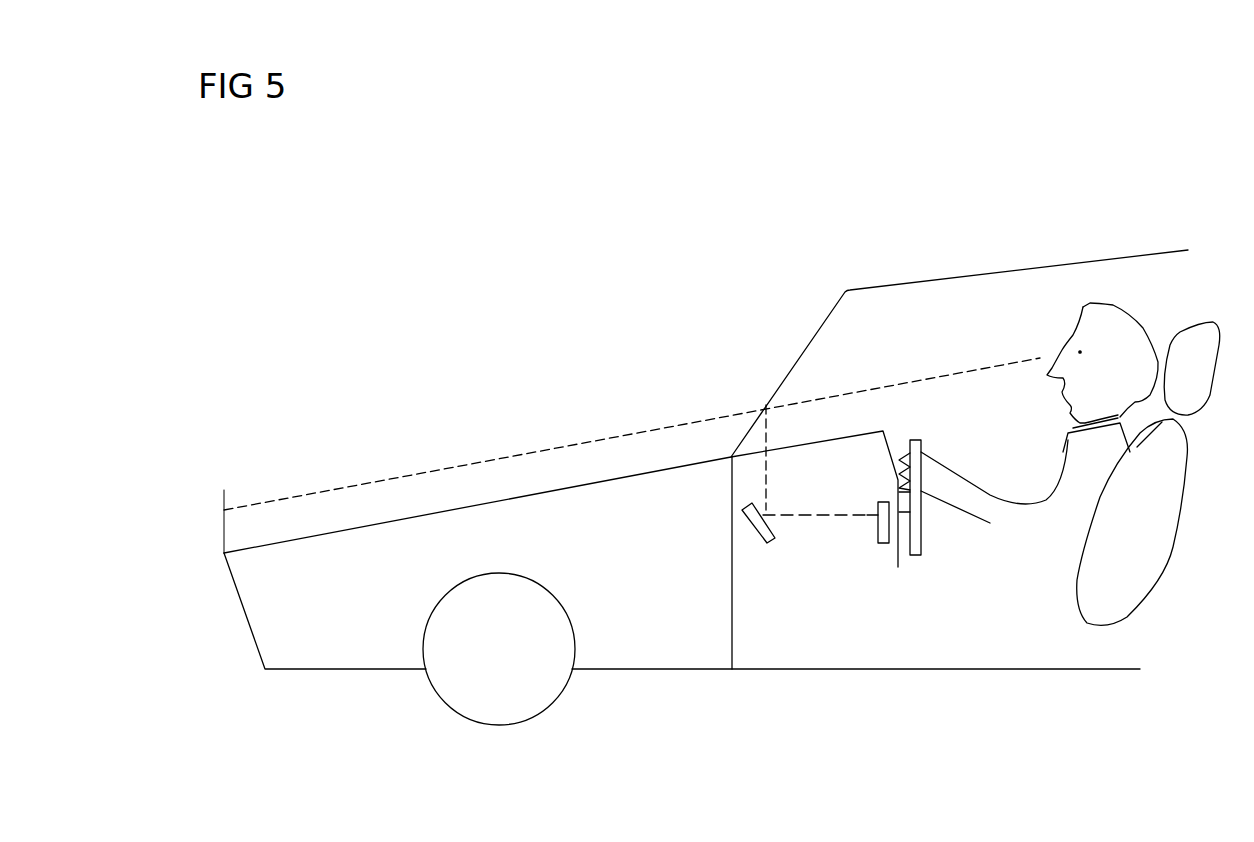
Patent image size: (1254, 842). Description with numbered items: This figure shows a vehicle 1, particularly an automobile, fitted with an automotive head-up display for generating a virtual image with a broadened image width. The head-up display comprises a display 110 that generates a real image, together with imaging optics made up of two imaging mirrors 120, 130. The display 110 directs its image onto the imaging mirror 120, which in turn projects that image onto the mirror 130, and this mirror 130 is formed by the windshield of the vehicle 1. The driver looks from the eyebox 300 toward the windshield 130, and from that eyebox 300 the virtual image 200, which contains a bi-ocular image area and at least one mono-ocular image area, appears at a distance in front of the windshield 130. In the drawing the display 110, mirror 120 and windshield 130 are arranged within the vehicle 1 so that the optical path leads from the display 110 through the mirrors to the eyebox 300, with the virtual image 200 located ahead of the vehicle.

The vehicle 1 is at (960, 250).
The display 110 is at (883, 550).
The imaging mirror 120 is at (757, 533).
The imaging mirror 130 is at (764, 398).
The virtual image 200 is at (223, 523).
The eyebox 300 is at (1038, 357).